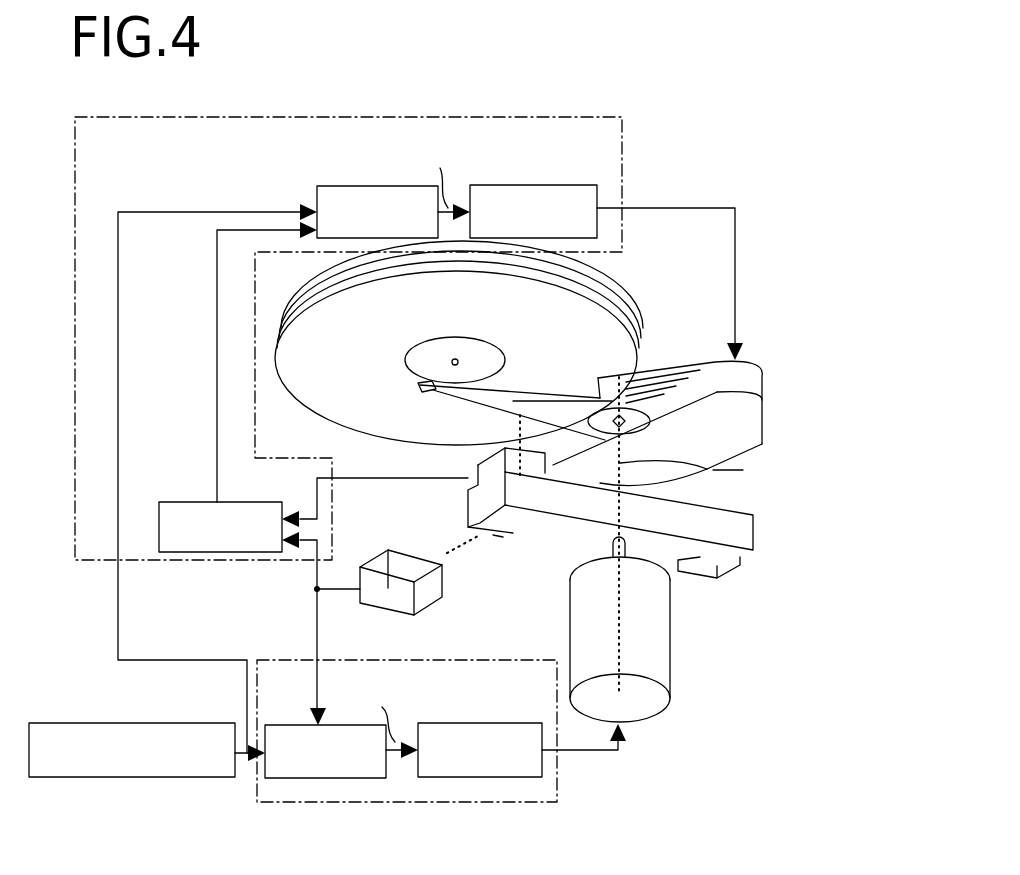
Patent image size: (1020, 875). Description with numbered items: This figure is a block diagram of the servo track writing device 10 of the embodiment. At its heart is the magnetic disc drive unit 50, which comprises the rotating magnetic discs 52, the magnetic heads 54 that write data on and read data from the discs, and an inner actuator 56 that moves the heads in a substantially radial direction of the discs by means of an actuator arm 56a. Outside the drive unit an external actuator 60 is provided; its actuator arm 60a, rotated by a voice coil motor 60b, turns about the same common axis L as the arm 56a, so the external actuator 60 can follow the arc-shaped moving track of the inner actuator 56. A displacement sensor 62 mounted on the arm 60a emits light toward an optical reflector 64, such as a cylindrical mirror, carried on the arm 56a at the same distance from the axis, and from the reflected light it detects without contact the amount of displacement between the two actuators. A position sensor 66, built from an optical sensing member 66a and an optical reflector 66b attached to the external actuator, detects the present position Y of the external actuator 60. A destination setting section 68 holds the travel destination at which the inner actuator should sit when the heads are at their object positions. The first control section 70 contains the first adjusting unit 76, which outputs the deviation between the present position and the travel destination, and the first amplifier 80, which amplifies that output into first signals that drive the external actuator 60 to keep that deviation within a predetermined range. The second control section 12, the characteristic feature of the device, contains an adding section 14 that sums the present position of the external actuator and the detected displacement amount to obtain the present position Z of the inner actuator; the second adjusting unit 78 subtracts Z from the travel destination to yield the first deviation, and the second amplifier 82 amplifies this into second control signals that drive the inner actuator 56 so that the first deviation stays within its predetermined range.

The servo track writing device 10 is at (729, 191).
The second control section 12 is at (623, 133).
The adding section 14 is at (202, 502).
The magnetic disc drive unit 50 is at (835, 263).
The magnetic disc 52 is at (733, 286).
The magnetic head 54 is at (419, 391).
The inner actuator 56 is at (765, 380).
The actuator arm 56a is at (457, 399).
The external actuator 60 is at (790, 545).
The actuator arm 60a is at (738, 560).
The voice coil motor 60b is at (668, 612).
The displacement sensor 62 is at (479, 469).
The optical reflector 64 is at (512, 406).
The position sensor 66 is at (532, 609).
The optical sensing member 66a is at (442, 583).
The optical reflector 66b is at (503, 537).
The destination setting section 68 is at (166, 722).
The first control section 70 is at (400, 803).
The first adjusting unit 76 is at (304, 722).
The second adjusting unit 78 is at (340, 186).
The first amplifier 80 is at (456, 722).
The second amplifier 82 is at (520, 186).